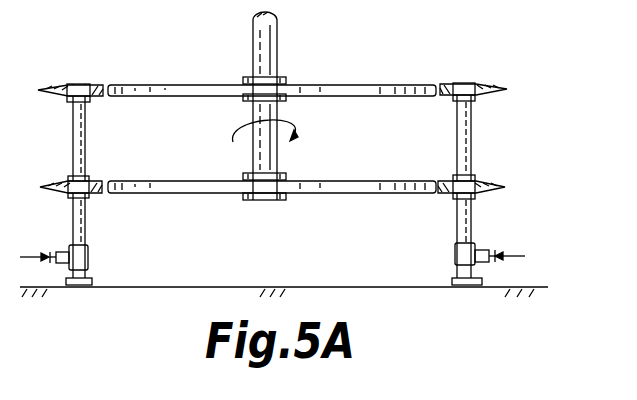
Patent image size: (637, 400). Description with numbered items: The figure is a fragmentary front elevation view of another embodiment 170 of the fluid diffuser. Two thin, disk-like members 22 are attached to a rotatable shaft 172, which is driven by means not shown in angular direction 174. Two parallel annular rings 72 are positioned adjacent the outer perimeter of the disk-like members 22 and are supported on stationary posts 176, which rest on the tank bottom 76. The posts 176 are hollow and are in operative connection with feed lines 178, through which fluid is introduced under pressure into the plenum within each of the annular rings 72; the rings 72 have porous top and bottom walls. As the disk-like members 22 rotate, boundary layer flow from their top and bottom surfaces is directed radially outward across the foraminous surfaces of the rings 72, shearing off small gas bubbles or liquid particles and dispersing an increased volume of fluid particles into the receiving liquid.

The disk-like member 22 is at (198, 78).
The annular ring 72 is at (73, 84).
The tank bottom 76 is at (290, 282).
The fluid diffuser embodiment 170 is at (330, 58).
The rotatable shaft 172 is at (273, 36).
The angular direction 174 is at (299, 126).
The stationary post 176 is at (85, 218).
The feed line 178 is at (58, 250).